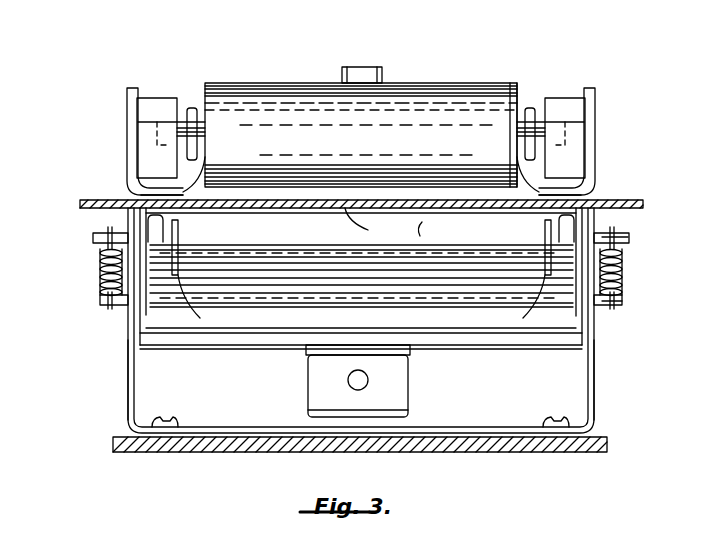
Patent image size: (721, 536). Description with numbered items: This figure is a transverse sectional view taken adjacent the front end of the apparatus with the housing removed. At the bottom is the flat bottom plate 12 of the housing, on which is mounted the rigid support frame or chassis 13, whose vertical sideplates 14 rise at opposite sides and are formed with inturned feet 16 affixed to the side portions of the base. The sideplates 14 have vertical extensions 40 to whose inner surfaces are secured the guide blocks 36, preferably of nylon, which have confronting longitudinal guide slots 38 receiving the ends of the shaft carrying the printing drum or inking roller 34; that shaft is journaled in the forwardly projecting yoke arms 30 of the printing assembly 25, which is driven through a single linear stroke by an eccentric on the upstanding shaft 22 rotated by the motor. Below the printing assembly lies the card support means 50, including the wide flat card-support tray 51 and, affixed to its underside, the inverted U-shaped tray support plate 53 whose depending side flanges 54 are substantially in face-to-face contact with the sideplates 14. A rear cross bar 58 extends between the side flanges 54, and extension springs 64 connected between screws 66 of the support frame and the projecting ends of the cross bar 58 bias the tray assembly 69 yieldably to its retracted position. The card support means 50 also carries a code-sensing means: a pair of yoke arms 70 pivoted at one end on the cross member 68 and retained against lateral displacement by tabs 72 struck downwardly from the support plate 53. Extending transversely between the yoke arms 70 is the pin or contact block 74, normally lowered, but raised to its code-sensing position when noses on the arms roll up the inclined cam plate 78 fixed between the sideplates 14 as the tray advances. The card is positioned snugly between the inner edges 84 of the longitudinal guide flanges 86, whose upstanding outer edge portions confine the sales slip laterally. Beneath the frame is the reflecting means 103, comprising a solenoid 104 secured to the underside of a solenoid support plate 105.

The bottom plate 12 is at (113, 452).
The support frame 13 is at (594, 397).
The sideplates 14 is at (134, 390).
The inturned feet 16 is at (183, 431).
The upstanding shaft 22 is at (384, 72).
The printing assembly 25 is at (242, 83).
The yoke arms 30 is at (192, 108).
The printing drum 34 is at (515, 84).
The guide blocks 36 is at (152, 100).
The guide slots 38 is at (152, 124).
The vertical extensions 40 is at (133, 90).
The card support means 50 is at (80, 209).
The card-support tray 51 is at (374, 227).
The tray support plate 53 is at (435, 236).
The side flanges 54 is at (146, 315).
The rear cross bar 58 is at (628, 236).
The extension springs 64 is at (100, 273).
The screws 66 is at (623, 302).
The cross member 68 is at (322, 262).
The tray assembly 69 is at (281, 246).
The yoke arms 70 is at (200, 320).
The tabs 72 is at (179, 234).
The contact block 74 is at (397, 268).
The cam plate 78 is at (430, 342).
The inner edges 84 is at (196, 186).
The guide flanges 86 is at (127, 176).
The reflecting means 103 is at (410, 394).
The solenoid 104 is at (306, 402).
The solenoid support plate 105 is at (308, 352).